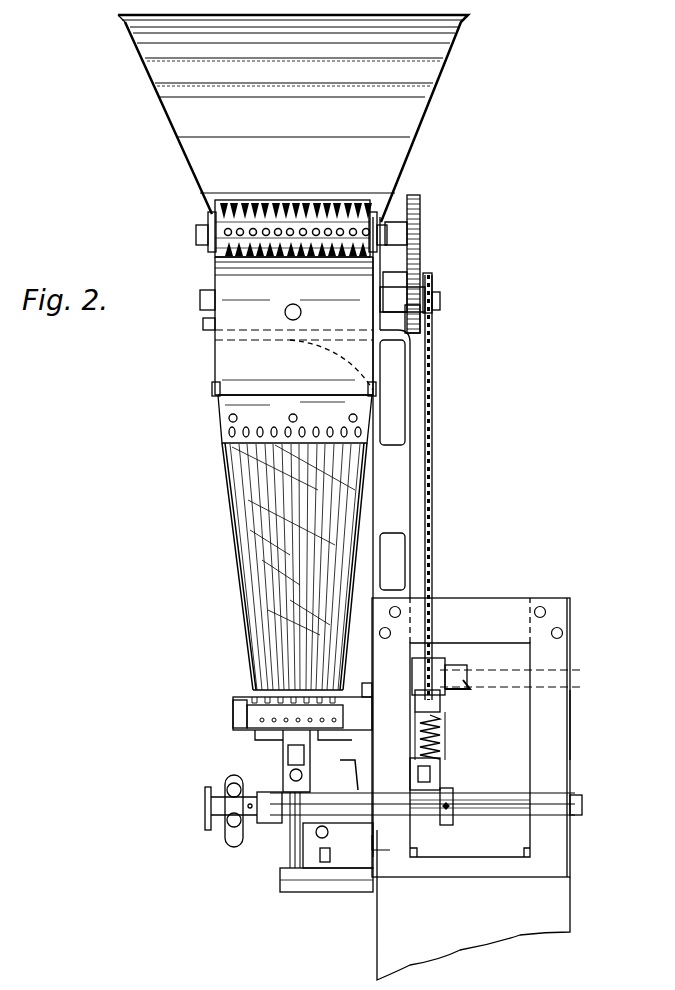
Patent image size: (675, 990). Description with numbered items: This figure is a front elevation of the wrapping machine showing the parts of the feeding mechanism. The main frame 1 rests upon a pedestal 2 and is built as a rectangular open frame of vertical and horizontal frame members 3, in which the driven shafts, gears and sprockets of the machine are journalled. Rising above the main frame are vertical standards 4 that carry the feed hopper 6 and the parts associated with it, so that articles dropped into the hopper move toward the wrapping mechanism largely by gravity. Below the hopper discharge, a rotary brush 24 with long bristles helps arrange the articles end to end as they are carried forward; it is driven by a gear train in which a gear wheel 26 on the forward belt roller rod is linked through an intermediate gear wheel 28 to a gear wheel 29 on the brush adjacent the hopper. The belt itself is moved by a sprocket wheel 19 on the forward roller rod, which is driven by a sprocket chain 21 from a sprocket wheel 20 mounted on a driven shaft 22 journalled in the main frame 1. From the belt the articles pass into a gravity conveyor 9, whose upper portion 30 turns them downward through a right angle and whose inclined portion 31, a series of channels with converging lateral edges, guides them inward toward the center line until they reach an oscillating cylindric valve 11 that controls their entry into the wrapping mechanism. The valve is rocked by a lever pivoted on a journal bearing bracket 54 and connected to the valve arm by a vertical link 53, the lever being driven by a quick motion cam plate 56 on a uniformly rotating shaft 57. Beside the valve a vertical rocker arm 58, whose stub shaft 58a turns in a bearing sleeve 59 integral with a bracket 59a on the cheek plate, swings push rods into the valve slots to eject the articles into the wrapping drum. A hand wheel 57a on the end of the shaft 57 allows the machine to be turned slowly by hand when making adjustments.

The main frame 1 is at (574, 723).
The pedestal 2 is at (560, 905).
The frame members 3 is at (477, 600).
The vertical standards 4 is at (397, 460).
The feed hopper 6 is at (403, 128).
The chute or gravity conveyor 9 is at (210, 467).
The oscillating cylindric valve 11 is at (408, 706).
The sprocket wheel 19 is at (433, 281).
The sprocket wheel 20 is at (452, 662).
The sprocket chain 21 is at (433, 548).
The driven shaft 22 is at (455, 700).
The brush 24 is at (312, 212).
The gear wheel 26 is at (425, 323).
The intermediate gear wheel 28 is at (420, 268).
The gear wheel 29 is at (420, 229).
The upper portion of the chute 30 is at (220, 365).
The inclined portion of the gravity conveyor 31 is at (243, 583).
The vertical link 53 is at (440, 752).
The journal bearing bracket 54 is at (420, 771).
The quick motion cam plate 56 is at (455, 796).
The shaft 57 is at (494, 806).
The hand wheel 57a is at (232, 772).
The vertical rocker arm 58 is at (288, 855).
The stub shaft 58a is at (296, 875).
The bearing sleeve 59 is at (352, 840).
The bracket 59a is at (372, 850).